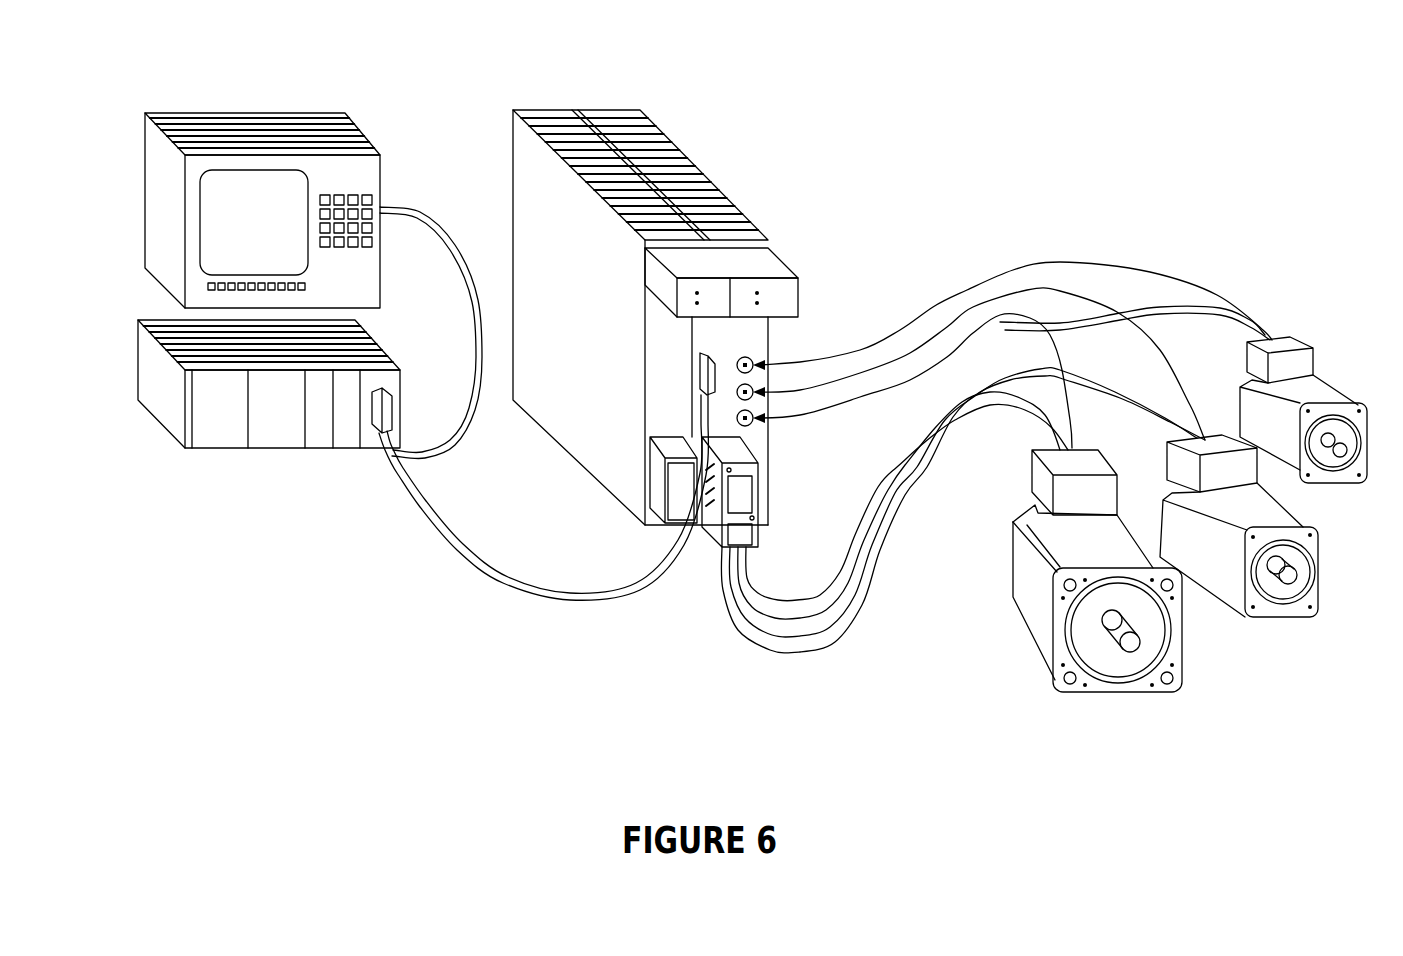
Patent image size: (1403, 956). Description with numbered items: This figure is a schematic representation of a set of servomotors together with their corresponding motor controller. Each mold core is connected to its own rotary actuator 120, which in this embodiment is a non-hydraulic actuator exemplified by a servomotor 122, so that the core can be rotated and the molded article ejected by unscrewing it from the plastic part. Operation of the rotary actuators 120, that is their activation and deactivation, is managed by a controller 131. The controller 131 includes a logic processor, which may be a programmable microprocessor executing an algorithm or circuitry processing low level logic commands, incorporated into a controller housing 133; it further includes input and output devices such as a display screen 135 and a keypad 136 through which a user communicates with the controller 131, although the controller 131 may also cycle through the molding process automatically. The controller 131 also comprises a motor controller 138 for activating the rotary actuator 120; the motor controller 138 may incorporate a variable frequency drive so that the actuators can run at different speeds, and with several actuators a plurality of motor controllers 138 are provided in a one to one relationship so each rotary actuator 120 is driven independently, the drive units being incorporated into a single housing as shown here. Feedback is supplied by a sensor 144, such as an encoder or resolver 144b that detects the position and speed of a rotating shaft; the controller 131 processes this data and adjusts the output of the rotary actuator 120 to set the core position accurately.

The rotary actuator 120 is at (1055, 620).
The servomotor 122 is at (1032, 587).
The controller 131 is at (225, 551).
The controller housing 133 is at (212, 425).
The display screen 135 is at (258, 200).
The keypad 136 is at (356, 185).
The motor controller 138 is at (588, 262).
The sensor 144 is at (1288, 363).
The encoder or resolver 144b is at (1080, 470).